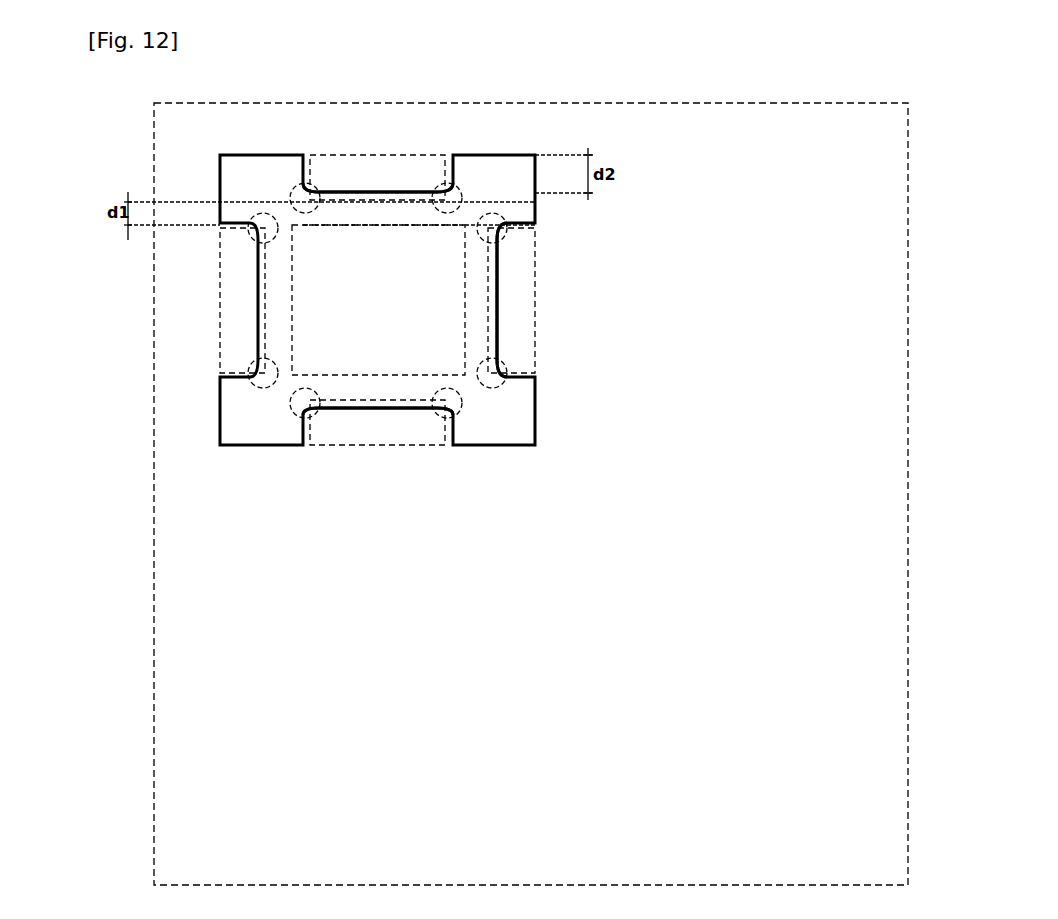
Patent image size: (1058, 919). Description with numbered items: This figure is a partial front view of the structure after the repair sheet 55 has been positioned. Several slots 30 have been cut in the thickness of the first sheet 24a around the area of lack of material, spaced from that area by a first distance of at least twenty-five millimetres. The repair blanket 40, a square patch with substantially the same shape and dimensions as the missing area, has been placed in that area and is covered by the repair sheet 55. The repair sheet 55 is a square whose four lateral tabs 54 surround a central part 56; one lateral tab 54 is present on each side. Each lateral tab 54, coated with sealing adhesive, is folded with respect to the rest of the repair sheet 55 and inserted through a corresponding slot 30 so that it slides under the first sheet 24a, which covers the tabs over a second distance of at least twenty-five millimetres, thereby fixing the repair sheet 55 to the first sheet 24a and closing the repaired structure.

The first sheet 24a is at (729, 276).
The repair sheet 55 is at (546, 222).
The lateral tabs 54 is at (378, 170).
The slots 30 is at (373, 411).
The repair blanket 40 is at (477, 327).
The central part 56 is at (393, 305).